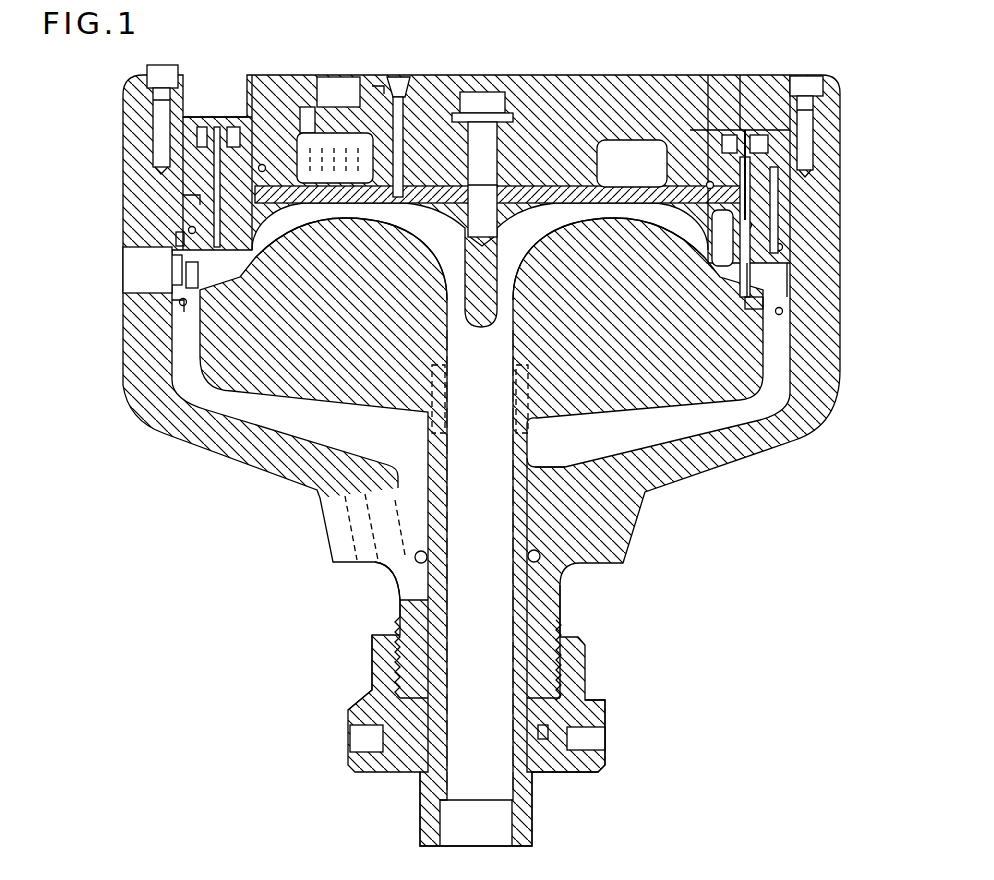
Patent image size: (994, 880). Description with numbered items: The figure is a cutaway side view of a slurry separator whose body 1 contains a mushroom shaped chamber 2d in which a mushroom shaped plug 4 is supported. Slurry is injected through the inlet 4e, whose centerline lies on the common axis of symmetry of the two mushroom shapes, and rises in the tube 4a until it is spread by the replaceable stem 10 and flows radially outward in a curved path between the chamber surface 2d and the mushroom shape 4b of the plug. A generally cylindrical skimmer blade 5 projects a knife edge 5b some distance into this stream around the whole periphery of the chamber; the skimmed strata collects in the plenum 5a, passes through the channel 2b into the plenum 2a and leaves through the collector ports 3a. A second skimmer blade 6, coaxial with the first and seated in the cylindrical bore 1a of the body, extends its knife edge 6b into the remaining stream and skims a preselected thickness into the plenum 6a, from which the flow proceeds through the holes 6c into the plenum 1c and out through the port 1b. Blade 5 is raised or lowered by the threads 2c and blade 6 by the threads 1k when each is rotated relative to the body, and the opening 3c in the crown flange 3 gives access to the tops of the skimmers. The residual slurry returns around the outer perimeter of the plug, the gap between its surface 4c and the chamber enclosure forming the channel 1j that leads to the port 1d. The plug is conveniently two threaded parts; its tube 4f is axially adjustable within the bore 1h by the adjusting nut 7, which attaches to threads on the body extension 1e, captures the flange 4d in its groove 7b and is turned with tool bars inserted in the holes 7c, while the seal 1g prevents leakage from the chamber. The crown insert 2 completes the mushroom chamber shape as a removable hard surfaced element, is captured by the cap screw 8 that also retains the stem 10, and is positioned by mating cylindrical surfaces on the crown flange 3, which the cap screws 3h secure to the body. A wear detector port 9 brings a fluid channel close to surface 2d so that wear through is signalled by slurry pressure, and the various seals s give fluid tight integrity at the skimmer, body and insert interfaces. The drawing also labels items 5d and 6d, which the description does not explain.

The body 1 is at (212, 481).
The cylindrical bore 1a is at (185, 200).
The port 1b is at (133, 277).
The plenum 1c is at (172, 308).
The port 1d is at (322, 526).
The body extension 1e is at (394, 607).
The seal 1g is at (392, 567).
The bore 1h is at (530, 602).
The channel 1j is at (590, 447).
The threads 1k is at (787, 150).
The crown insert 2 is at (572, 190).
The plenum 2a is at (638, 169).
The channel 2b is at (676, 190).
The threads 2c is at (718, 128).
The mushroom shaped chamber 2d is at (378, 88).
The crown flange 3 is at (446, 62).
The collector ports 3a is at (355, 106).
The opening 3c is at (216, 112).
The cap screws 3h is at (823, 75).
The mushroom shaped plug 4 is at (400, 824).
The tube 4a is at (493, 508).
The mushroom shape of plug 4b is at (633, 222).
The surface 4c is at (640, 410).
The flange 4d is at (598, 768).
The inlet 4e is at (492, 838).
The tube 4f is at (396, 628).
The skimmer blade 5 is at (748, 214).
The plenum 5a is at (180, 236).
The knife edge 5b is at (766, 268).
The sleeve 5d is at (235, 118).
The second skimmer blade 6 is at (776, 188).
The plenum 6a is at (190, 266).
The knife edge 6b is at (742, 303).
The holes 6c is at (190, 278).
The seal ring 6d is at (201, 118).
The adjusting nut 7 is at (370, 672).
The groove 7b is at (545, 732).
The holes 7c is at (365, 737).
The cap screw 8 is at (484, 98).
The wear detector port 9 is at (400, 86).
The stem 10 is at (527, 187).
The seals s is at (263, 165).